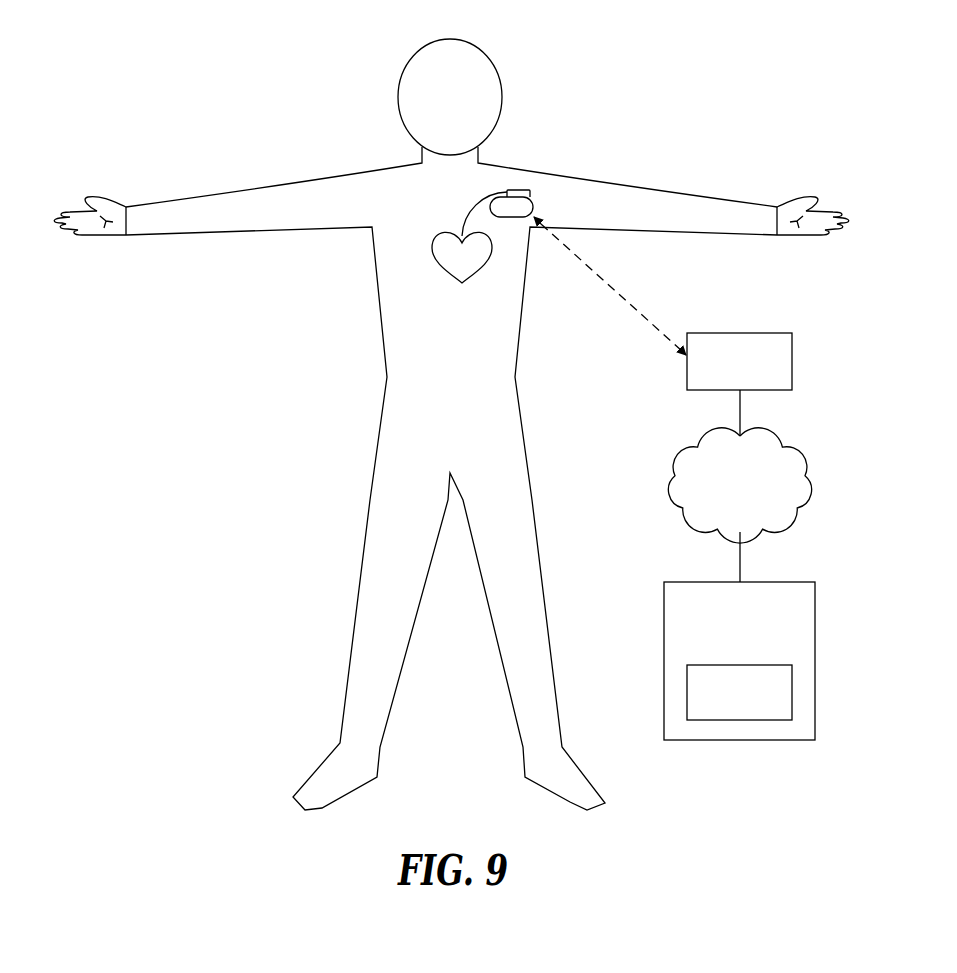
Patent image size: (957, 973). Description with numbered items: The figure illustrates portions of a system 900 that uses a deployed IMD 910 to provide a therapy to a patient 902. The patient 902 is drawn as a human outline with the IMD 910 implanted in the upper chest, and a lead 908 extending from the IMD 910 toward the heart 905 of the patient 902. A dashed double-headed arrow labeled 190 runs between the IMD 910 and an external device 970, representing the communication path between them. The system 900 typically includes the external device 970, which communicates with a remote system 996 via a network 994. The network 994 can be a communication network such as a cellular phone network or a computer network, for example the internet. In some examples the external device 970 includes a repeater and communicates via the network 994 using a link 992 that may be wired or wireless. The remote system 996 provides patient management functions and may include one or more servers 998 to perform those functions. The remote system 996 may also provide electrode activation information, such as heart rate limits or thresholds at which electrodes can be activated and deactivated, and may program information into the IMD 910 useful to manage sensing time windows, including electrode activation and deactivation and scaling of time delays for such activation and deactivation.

The system 900 is at (746, 57).
The patient 902 is at (377, 302).
The heart 905 is at (445, 271).
The lead 908 is at (472, 203).
The IMD 910 is at (515, 190).
The wireless communication link 190 is at (604, 279).
The external device 970 is at (740, 333).
The link 992 is at (741, 407).
The network 994 is at (810, 480).
The remote system 996 is at (765, 582).
The servers 998 is at (740, 665).